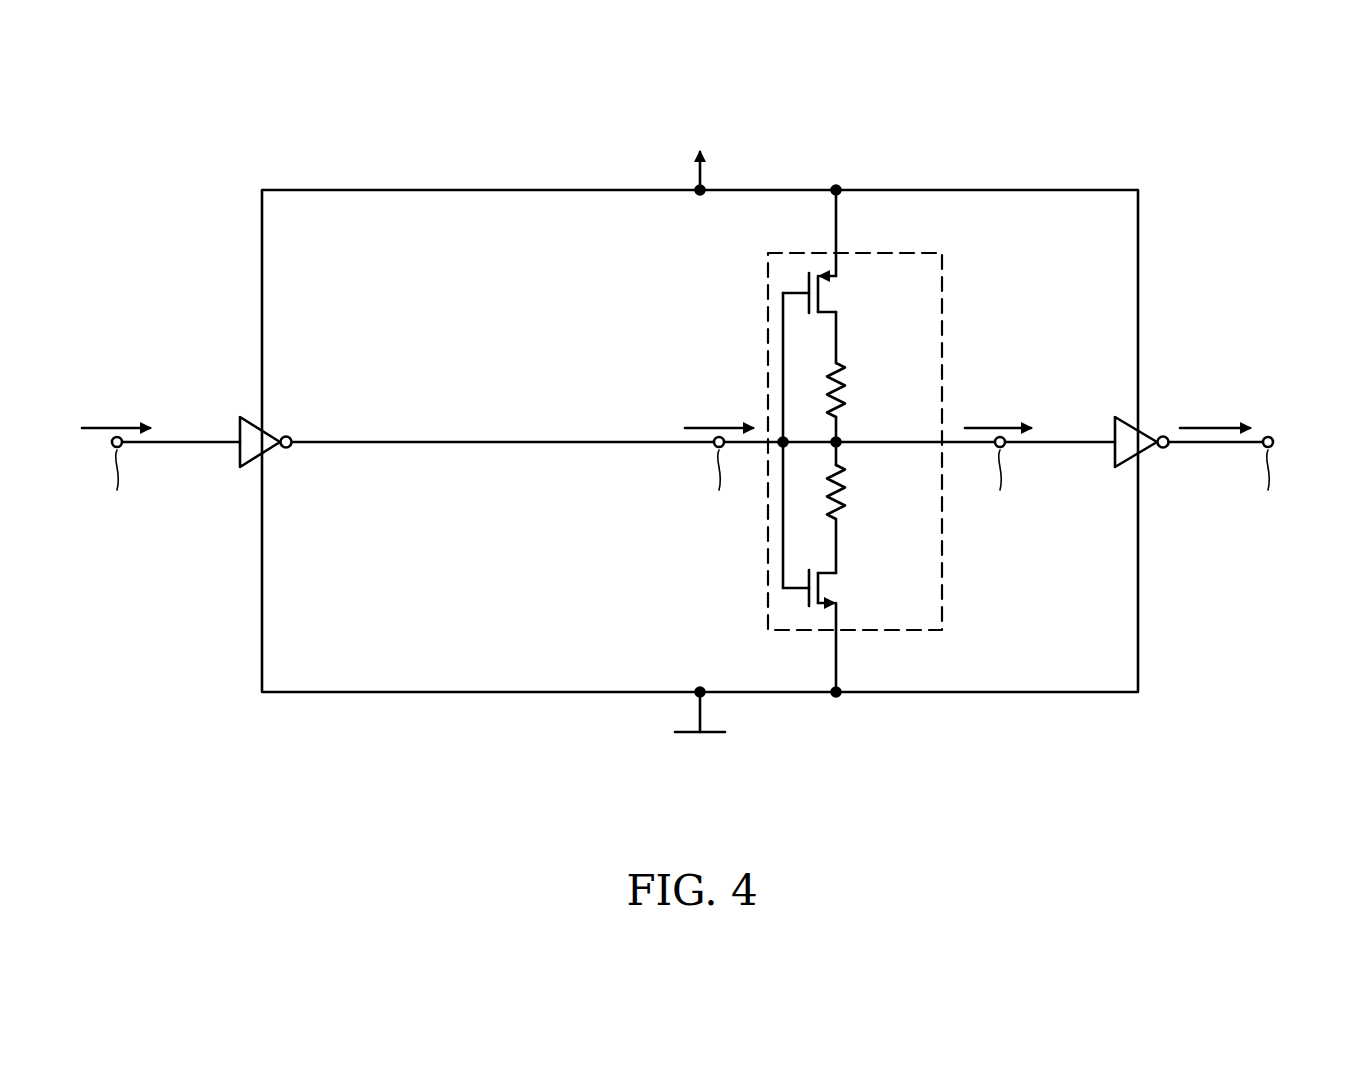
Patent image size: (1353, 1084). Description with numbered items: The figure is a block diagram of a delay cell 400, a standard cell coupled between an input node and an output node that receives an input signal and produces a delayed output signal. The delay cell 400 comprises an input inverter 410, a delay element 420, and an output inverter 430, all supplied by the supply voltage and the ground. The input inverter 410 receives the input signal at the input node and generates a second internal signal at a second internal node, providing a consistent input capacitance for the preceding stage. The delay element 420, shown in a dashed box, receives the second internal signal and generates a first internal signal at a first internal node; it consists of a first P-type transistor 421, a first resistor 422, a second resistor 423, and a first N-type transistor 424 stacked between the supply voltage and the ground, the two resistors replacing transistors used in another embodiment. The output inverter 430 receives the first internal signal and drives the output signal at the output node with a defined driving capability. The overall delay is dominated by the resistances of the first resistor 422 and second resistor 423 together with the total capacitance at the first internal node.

The delay cell 400 is at (689, 457).
The input inverter 410 is at (236, 455).
The delay element 420 is at (877, 441).
The first P-type transistor 421 is at (836, 294).
The first resistor 422 is at (848, 386).
The second resistor 423 is at (848, 488).
The first N-type transistor 424 is at (832, 591).
The output inverter 430 is at (1113, 455).